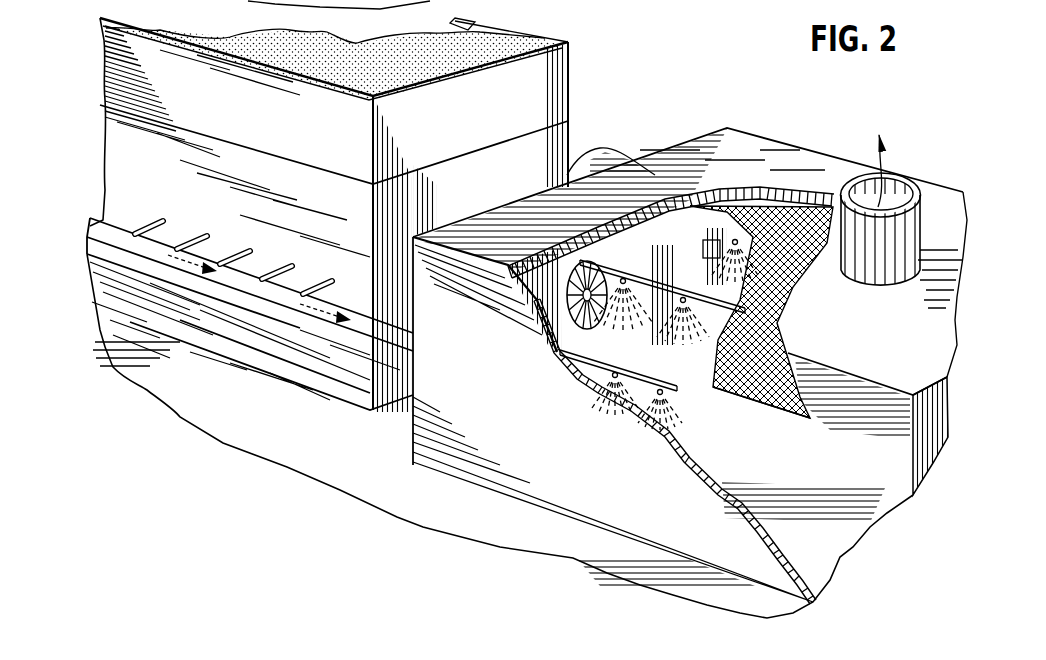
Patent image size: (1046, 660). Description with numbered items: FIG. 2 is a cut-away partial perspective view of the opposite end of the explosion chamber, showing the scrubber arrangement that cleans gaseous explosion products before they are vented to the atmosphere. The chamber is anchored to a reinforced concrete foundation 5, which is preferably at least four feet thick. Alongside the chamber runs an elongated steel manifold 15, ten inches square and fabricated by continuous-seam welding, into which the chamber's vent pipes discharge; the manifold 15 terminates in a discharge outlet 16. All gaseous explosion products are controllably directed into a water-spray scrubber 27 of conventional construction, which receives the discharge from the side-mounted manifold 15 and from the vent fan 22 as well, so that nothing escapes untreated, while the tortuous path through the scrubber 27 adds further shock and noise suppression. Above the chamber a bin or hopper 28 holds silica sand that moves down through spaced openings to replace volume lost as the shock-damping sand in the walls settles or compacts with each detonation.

The reinforced concrete foundation 5 is at (247, 415).
The manifold 15 is at (245, 295).
The discharge outlet 16 is at (390, 352).
The vent fan 22 is at (530, 431).
The scrubber 27 is at (548, 325).
The bin or hopper 28 is at (560, 85).